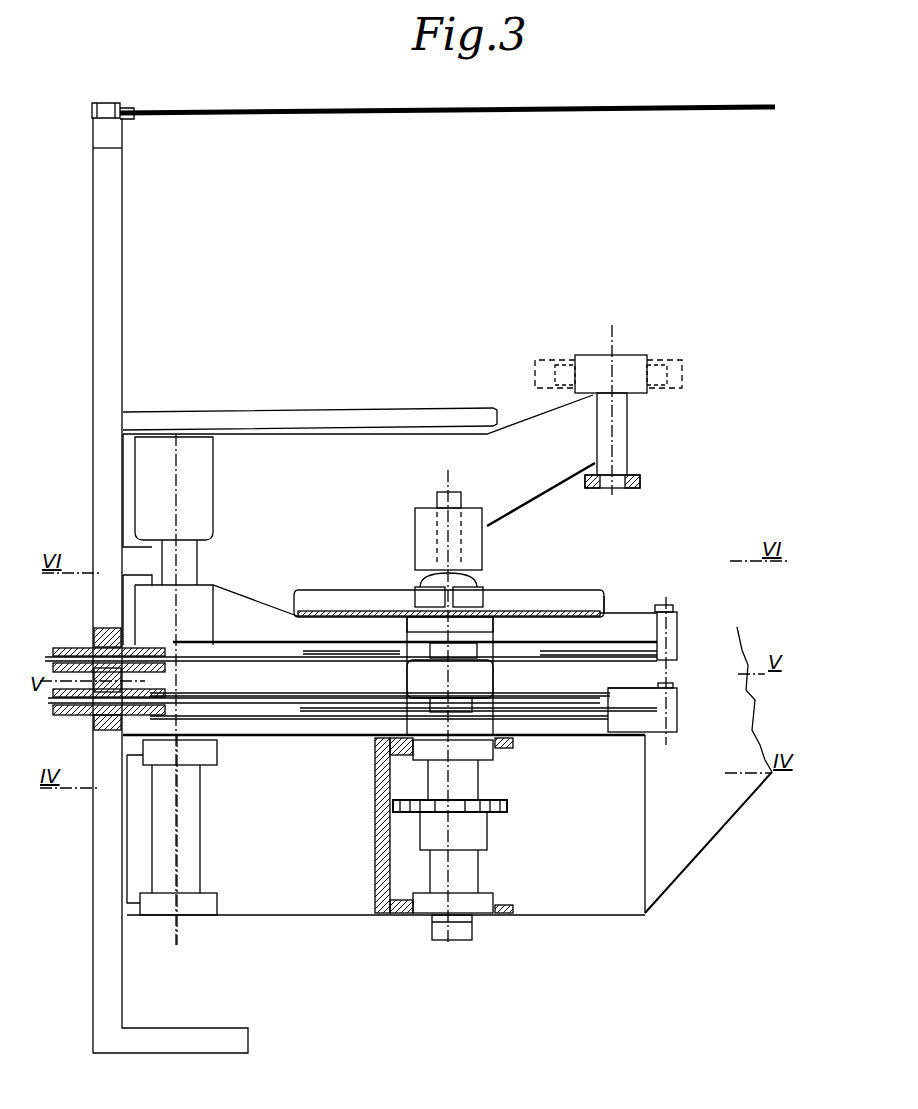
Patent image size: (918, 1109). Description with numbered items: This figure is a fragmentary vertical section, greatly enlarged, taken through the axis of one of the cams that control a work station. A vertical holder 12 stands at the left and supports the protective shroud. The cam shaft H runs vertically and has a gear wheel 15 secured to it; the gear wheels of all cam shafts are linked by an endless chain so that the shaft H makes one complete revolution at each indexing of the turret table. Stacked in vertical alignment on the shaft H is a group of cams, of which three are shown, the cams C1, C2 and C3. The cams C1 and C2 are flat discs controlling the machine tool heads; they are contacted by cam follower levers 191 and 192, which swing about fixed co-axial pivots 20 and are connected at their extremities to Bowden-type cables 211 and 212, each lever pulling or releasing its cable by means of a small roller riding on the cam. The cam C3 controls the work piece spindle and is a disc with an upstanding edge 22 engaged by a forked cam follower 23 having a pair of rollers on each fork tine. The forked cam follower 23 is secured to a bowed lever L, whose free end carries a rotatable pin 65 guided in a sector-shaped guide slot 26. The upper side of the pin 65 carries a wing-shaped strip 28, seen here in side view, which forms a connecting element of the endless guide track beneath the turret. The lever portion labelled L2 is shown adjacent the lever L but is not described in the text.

The vertical holder 12 is at (115, 996).
The gear wheel 15 is at (410, 812).
The cam follower lever 191 is at (640, 697).
The cam follower lever 192 is at (628, 653).
The fixed co-axial pivots 20 is at (670, 605).
The cable 211 is at (223, 698).
The cable 212 is at (307, 650).
The upstanding edge 22 is at (603, 592).
The forked cam follower 23 is at (407, 588).
The guide slot 26 is at (638, 473).
The wing-shaped strip 28 is at (632, 355).
The rotatable pin 65 is at (618, 417).
The cam C1 is at (348, 708).
The cam C2 is at (535, 649).
The cam C3 is at (540, 598).
The cam shaft H is at (475, 838).
The bowed lever L is at (307, 445).
The lever arm L2 is at (483, 547).